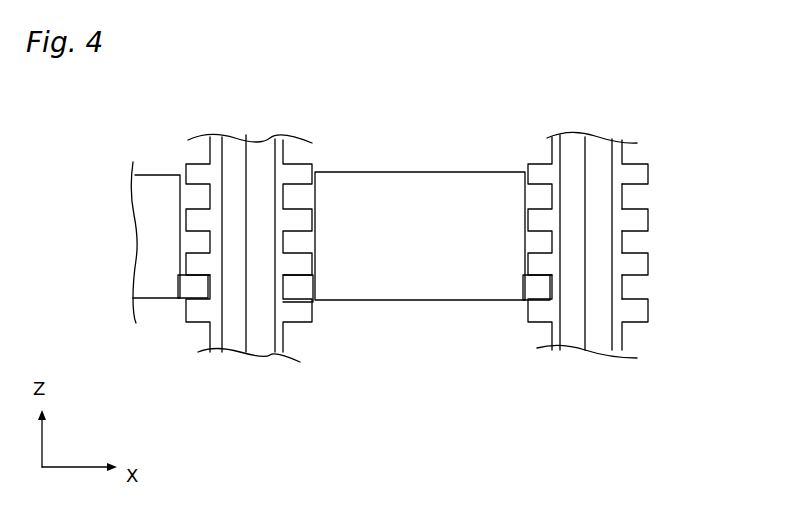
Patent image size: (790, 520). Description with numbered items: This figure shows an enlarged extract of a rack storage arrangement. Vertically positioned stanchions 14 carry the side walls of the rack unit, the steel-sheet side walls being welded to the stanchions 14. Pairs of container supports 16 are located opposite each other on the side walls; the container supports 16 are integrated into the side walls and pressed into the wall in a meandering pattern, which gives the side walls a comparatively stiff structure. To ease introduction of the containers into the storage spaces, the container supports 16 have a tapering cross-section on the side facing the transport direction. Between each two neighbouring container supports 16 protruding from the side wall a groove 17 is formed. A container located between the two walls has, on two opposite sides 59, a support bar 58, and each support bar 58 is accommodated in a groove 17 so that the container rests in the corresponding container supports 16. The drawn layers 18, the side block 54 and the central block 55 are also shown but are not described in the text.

The comb electrode 14 is at (443, 255).
The tooth / projection 16 is at (648, 170).
The recess between teeth 17 is at (644, 197).
The electrode layer 18 is at (239, 168).
The side block 54 is at (148, 213).
The central block 55 is at (420, 236).
The insert element 58 is at (190, 287).
The connection region 59 is at (319, 193).